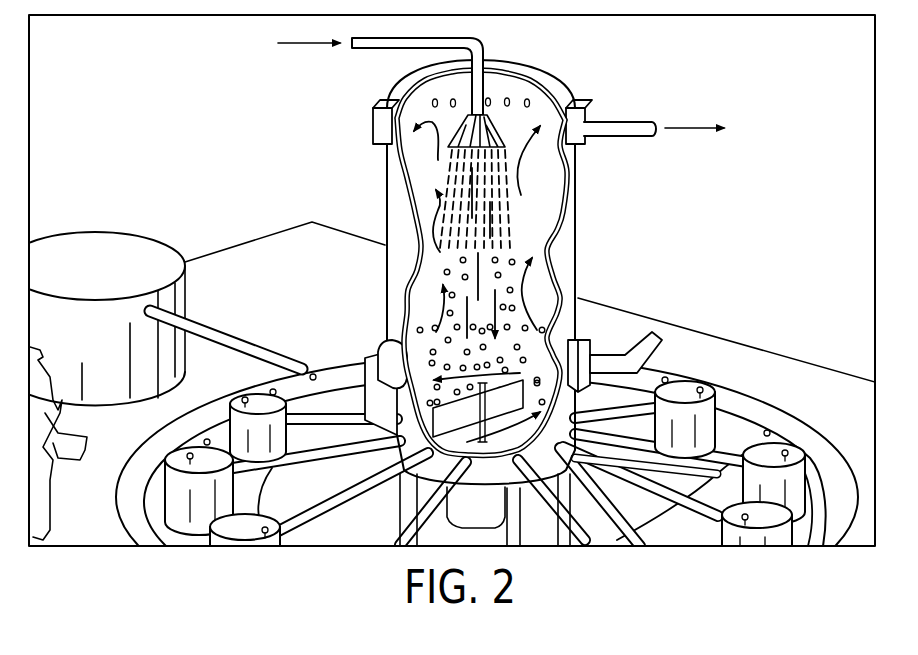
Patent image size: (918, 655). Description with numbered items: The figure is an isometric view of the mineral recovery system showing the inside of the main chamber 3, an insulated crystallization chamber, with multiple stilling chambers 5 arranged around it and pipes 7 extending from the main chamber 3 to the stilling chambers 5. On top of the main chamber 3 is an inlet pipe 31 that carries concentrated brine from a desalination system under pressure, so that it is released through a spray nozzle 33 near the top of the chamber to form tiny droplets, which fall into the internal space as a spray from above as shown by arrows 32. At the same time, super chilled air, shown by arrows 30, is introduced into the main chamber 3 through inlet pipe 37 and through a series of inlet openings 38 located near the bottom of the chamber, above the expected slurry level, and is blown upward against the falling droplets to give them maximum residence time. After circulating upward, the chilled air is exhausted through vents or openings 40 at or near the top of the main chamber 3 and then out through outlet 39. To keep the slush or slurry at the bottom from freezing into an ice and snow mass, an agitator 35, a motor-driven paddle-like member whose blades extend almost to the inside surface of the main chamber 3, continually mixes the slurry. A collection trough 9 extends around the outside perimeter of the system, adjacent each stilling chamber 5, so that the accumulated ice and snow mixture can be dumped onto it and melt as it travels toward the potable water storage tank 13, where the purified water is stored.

The main chamber 3 is at (386, 190).
The stilling chambers 5 is at (775, 443).
The pipes 7 is at (324, 512).
The collection trough 9 is at (824, 448).
The potable water storage tank 13 is at (91, 231).
The arrows (super chilled air) 30 is at (443, 326).
The inlet pipe 31 is at (485, 47).
The arrows (brine spray) 32 is at (503, 187).
The spray nozzle 33 is at (466, 122).
The agitator 35 is at (524, 386).
The inlet pipe 37 is at (675, 321).
The inlet openings 38 is at (457, 322).
The outlet 39 is at (682, 127).
The vents or openings 40 is at (529, 104).